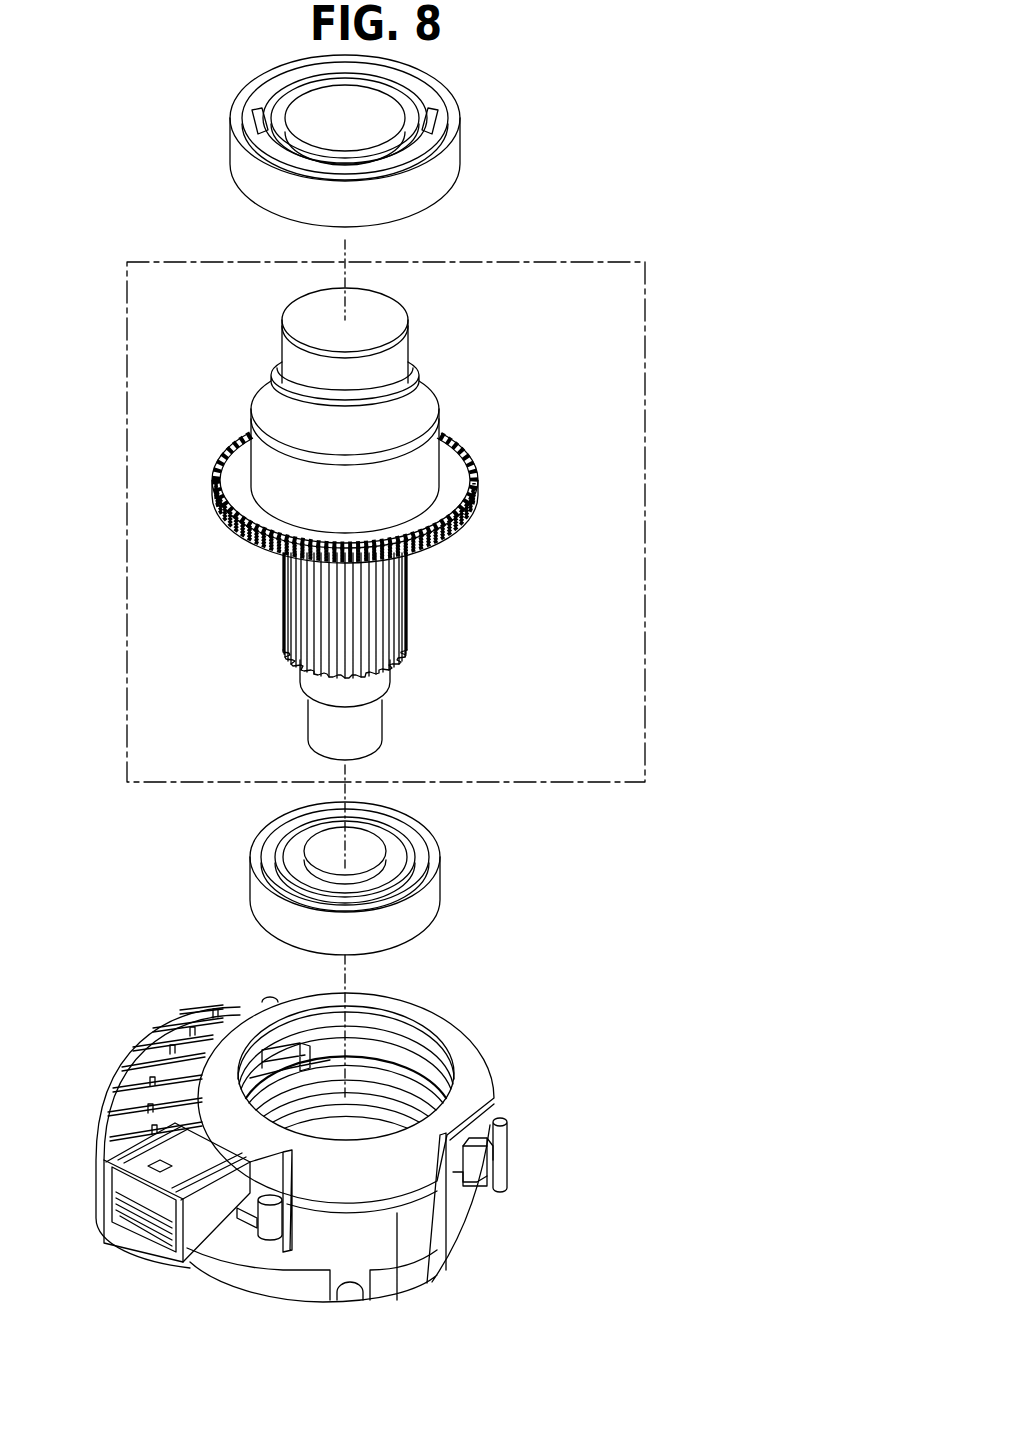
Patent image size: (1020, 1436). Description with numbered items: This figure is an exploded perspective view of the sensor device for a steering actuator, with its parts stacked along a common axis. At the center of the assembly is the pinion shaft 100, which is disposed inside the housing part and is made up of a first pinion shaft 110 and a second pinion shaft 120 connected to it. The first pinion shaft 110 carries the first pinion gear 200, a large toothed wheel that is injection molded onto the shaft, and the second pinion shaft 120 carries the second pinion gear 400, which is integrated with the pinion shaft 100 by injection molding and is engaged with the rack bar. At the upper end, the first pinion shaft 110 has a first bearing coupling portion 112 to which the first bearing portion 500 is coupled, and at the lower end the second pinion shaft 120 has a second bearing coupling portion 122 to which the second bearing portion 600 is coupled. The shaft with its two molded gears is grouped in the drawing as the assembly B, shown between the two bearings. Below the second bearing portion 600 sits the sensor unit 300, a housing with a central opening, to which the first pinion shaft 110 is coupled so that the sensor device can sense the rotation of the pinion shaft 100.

The first bearing portion 500 is at (445, 172).
The shaft assembly B is at (628, 262).
The pinion shaft 100 is at (442, 524).
The first bearing coupling portion 112 is at (397, 357).
The first pinion shaft 110 is at (415, 473).
The second pinion shaft 120 is at (377, 683).
The second bearing coupling portion 122 is at (368, 730).
The first pinion gear 200 is at (252, 517).
The second pinion gear 400 is at (287, 636).
The second bearing portion 600 is at (425, 903).
The sensor unit 300 is at (467, 1077).